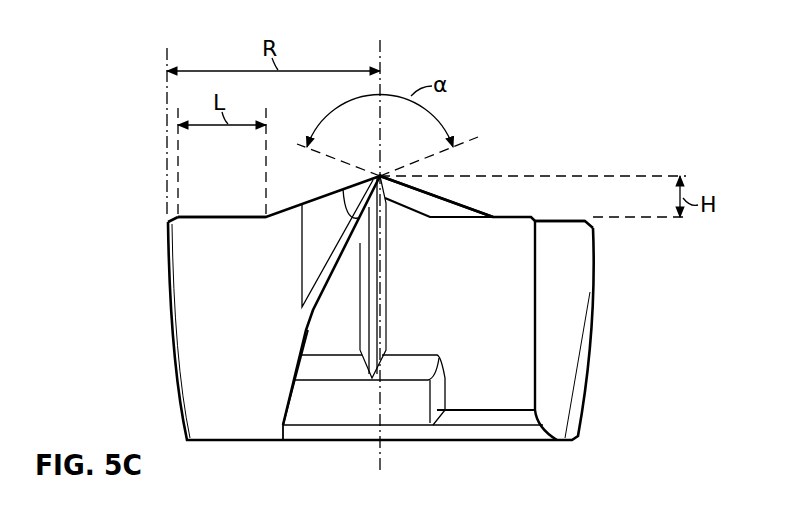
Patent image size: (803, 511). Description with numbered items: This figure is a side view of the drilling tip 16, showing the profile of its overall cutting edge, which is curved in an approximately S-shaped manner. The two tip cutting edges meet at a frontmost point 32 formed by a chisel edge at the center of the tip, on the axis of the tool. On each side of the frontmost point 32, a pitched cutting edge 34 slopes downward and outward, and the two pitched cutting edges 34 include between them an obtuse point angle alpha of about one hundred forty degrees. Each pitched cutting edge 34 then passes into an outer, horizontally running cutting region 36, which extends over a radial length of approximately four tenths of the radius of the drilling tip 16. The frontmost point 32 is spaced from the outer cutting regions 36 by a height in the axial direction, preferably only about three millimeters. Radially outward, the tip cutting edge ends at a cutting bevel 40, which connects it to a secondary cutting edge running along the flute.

The drilling tip 16 is at (115, 287).
The frontmost point 32 is at (382, 174).
The pitched cutting edge 34 is at (435, 193).
The outer cutting region 36 is at (220, 216).
The cutting bevel 40 is at (165, 215).